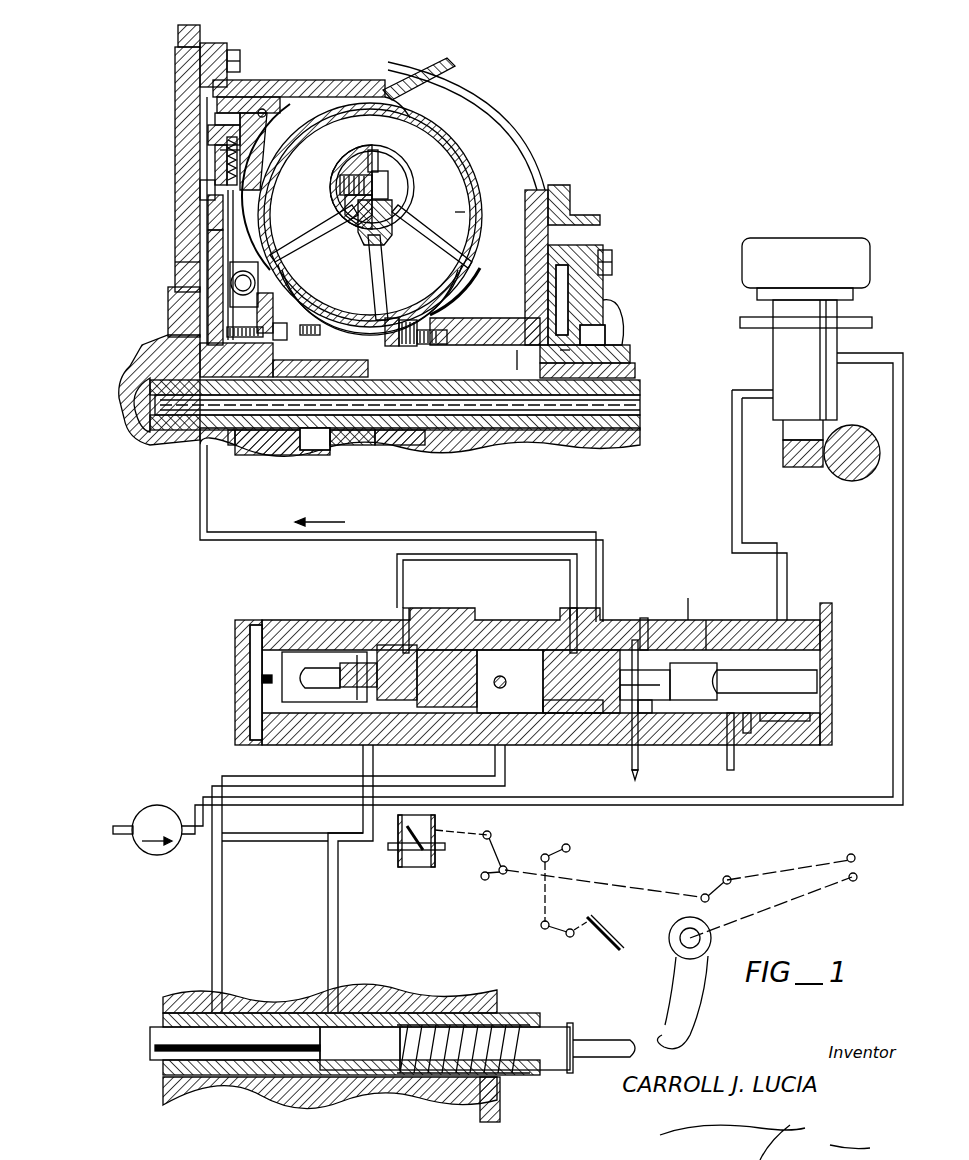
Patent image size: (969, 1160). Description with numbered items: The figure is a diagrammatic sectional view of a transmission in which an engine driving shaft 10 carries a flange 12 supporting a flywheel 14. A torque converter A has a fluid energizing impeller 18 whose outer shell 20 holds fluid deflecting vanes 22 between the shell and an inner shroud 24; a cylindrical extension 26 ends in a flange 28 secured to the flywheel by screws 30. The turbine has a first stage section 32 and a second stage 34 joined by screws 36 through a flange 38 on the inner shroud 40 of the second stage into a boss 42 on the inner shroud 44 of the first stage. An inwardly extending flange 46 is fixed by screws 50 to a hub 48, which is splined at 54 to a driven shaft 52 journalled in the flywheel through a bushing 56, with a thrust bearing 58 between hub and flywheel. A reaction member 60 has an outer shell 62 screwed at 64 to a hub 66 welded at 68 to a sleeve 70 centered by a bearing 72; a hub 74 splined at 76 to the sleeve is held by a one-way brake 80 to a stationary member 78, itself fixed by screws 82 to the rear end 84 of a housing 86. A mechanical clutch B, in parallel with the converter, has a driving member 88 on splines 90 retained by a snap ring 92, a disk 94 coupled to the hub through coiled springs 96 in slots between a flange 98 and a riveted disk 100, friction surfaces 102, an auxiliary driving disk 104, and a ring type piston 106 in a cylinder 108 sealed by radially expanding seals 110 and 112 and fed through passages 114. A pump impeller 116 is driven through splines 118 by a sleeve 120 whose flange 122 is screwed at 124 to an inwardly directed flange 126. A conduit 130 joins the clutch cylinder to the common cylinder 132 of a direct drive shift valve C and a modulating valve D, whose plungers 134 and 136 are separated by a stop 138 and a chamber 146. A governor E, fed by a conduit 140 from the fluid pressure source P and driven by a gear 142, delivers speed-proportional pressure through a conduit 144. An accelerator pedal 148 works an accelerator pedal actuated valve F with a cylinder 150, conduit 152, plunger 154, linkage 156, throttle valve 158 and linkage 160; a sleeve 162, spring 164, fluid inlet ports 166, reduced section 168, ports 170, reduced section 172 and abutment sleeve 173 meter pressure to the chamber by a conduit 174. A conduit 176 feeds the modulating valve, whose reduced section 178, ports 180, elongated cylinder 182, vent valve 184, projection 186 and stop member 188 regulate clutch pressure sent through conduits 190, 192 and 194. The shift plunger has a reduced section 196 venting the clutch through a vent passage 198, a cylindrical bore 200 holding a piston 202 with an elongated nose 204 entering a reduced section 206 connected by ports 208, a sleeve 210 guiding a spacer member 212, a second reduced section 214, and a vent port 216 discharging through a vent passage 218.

The driving shaft 10 is at (165, 335).
The flange 12 is at (170, 292).
The flywheel 14 is at (198, 212).
The fluid energizing impeller 18 is at (462, 160).
The outer shell 20 is at (480, 173).
The fluid deflecting vanes 22 is at (460, 212).
The inner shroud 24 is at (402, 168).
The cylindrical extension 26 is at (285, 83).
The flange 28 is at (205, 45).
The screws 30 is at (241, 60).
The first stage section 32 is at (323, 120).
The second stage 34 is at (455, 283).
The screws 36 is at (392, 186).
The flange 38 is at (380, 158).
The inner shroud 40 is at (386, 224).
The boss 42 is at (345, 198).
The inner shroud 44 is at (350, 153).
The inwardly extending flange 46 is at (273, 308).
The hub 48 is at (270, 360).
The screws 50 is at (287, 330).
The driven shaft 52 is at (428, 431).
The splines 54 is at (276, 447).
The bushing 56 is at (158, 366).
The thrust bearing 58 is at (233, 447).
The reaction member 60 is at (309, 353).
The outer shell 62 is at (290, 292).
The screws 64 is at (374, 315).
The hub 66 is at (352, 447).
The welding 68 is at (388, 447).
The sleeve 70 is at (402, 378).
The bearing 72 is at (318, 450).
The hub 74 is at (630, 355).
The splines 76 is at (630, 372).
The stationary member 78 is at (598, 318).
The one-way brake 80 is at (600, 336).
The screws 82 is at (613, 265).
The rear end 84 is at (562, 198).
The housing 86 is at (473, 115).
The driving member 88 is at (255, 150).
The splines 90 is at (270, 113).
The snap ring 92 is at (265, 116).
The disk 94 is at (233, 245).
The coiled springs 96 is at (265, 250).
The flange 98 is at (243, 270).
The disk 100 is at (285, 255).
The friction surfaces 102 is at (218, 145).
The auxiliary driving disk 104 is at (222, 122).
The ring type piston 106 is at (200, 184).
The cylinder 108 is at (200, 200).
The radially expanding seal 110 is at (220, 135).
The radially expanding seal 112 is at (200, 228).
The passages 114 is at (178, 265).
The impeller 116 is at (445, 326).
The splines 118 is at (565, 358).
The sleeve 120 is at (517, 360).
The flange 122 is at (440, 340).
The screws 124 is at (395, 320).
The inwardly directed flange 126 is at (420, 300).
The conduit 130 is at (397, 535).
The cylinder 132 is at (443, 600).
The plunger 134 is at (580, 745).
The plunger 136 is at (455, 720).
The stop 138 is at (498, 675).
The conduit 140 is at (893, 755).
The gear 142 is at (786, 465).
The conduit 144 is at (735, 524).
The chamber 146 is at (532, 650).
The accelerator pedal 148 is at (600, 933).
The cylinder 150 is at (310, 1013).
The conduit 152 is at (338, 922).
The plunger 154 is at (545, 1035).
The linkage 156 is at (572, 856).
The throttle valve 158 is at (408, 828).
The linkage 160 is at (492, 835).
The sleeve 162 is at (360, 1078).
The spring 164 is at (447, 1078).
The fluid inlet ports 166 is at (322, 1013).
The section of reduced diameter 168 is at (290, 1078).
The ports 170 is at (225, 1105).
The section of reduced diameter 172 is at (235, 1013).
The sleeve 173 is at (193, 1000).
The conduit 174 is at (222, 913).
The conduit 176 is at (365, 820).
The section of reduced diameter 178 is at (380, 608).
The ports 180 is at (396, 645).
The elongated cylinder 182 is at (350, 662).
The vent valve 184 is at (287, 660).
The projection 186 is at (262, 680).
The stop member 188 is at (250, 660).
The conduit 190 is at (412, 600).
The conduit 192 is at (508, 555).
The conduit 194 is at (578, 590).
The section of reduced diameter 196 is at (630, 722).
The vent passage 198 is at (640, 772).
The cylindrical bore 200 is at (700, 663).
The piston 202 is at (706, 618).
The elongated nose 204 is at (642, 670).
The section of reduced diameter 206 is at (656, 738).
The ports 208 is at (644, 616).
The sleeve 210 is at (832, 640).
The spacer member 212 is at (812, 675).
The second section of reduced diameter 214 is at (748, 740).
The vent port 216 is at (785, 735).
The vent passage 218 is at (731, 770).
The torque converter A is at (407, 110).
The mechanical clutch B is at (220, 152).
The direct drive shift valve C is at (688, 598).
The modulating valve D is at (357, 660).
The governor E is at (806, 339).
The accelerator pedal actuated valve F is at (418, 926).
The source of fluid pressure P is at (147, 830).